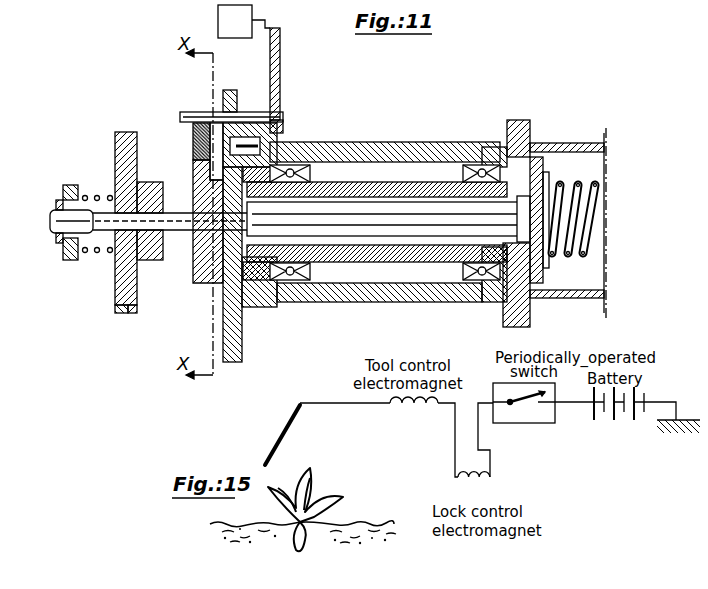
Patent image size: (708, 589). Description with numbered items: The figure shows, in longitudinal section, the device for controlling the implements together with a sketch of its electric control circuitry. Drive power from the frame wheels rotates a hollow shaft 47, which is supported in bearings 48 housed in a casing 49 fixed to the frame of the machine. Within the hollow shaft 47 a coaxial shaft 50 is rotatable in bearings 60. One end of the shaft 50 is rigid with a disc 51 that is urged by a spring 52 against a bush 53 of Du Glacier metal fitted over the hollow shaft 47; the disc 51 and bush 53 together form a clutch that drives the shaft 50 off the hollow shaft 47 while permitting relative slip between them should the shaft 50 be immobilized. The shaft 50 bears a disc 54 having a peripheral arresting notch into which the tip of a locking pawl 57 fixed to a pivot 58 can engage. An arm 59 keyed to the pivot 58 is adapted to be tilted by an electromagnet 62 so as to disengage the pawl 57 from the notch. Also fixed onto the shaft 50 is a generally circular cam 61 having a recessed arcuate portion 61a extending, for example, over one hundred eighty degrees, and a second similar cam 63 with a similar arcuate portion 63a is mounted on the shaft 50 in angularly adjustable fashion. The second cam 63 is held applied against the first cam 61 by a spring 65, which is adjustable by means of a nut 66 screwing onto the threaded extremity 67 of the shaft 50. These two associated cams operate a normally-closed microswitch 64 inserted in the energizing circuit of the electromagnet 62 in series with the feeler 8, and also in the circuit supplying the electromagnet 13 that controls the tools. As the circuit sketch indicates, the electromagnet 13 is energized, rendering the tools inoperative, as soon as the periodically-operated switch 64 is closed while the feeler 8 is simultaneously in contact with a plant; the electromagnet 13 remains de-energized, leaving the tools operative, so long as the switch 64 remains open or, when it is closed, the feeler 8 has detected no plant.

In FIG. 11, the electromagnet 62 is at (244, 21).
In FIG. 15, the electromagnet 62 is at (490, 480).
In FIG. 11, the arm 59 is at (282, 78).
In FIG. 11, the pivot 58 is at (180, 112).
In FIG. 11, the locking pawl 57 is at (193, 138).
In FIG. 11, the disc 54 is at (203, 283).
In FIG. 11, the bearings 60 is at (277, 300).
In FIG. 11, the casing 49 is at (365, 150).
In FIG. 11, the hollow shaft 47 is at (400, 184).
In FIG. 11, the bearings 48 is at (297, 165).
In FIG. 11, the coaxial shaft 50 is at (400, 240).
In FIG. 11, the threaded extremity 67 is at (45, 210).
In FIG. 11, the nut 66 is at (63, 250).
In FIG. 11, the spring 65 is at (98, 195).
In FIG. 11, the cam 61 is at (115, 300).
In FIG. 11, the second cam 63 is at (112, 278).
In FIG. 11, the arcuate portion 63a is at (118, 313).
In FIG. 11, the recessed arcuate portion 61a is at (133, 313).
In FIG. 11, the bush 53 is at (510, 248).
In FIG. 11, the disc 51 is at (545, 170).
In FIG. 11, the spring 52 is at (595, 222).
In FIG. 15, the feeler 8 is at (272, 437).
In FIG. 15, the electromagnet 13 is at (415, 410).
In FIG. 15, the microswitch 64 is at (555, 417).